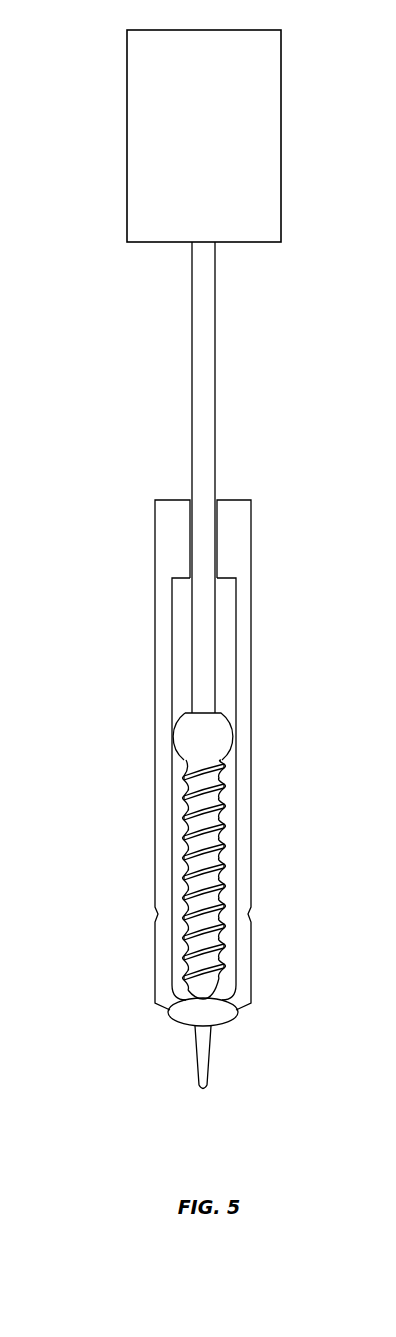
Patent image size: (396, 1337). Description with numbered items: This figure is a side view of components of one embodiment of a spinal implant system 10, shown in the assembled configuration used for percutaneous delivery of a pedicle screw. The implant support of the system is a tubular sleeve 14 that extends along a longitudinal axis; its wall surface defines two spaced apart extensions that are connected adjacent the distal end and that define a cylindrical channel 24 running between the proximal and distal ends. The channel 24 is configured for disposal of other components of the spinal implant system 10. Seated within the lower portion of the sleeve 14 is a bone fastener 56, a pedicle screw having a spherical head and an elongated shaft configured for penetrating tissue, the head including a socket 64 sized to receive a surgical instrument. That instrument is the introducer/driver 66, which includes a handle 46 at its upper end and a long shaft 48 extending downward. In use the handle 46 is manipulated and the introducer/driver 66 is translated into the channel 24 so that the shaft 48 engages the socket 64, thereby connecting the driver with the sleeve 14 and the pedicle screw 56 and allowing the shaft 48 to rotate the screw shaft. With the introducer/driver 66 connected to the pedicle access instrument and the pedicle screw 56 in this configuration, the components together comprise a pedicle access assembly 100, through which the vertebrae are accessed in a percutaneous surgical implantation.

The spinal implant system 10 is at (18, 525).
The sleeve 14 is at (155, 540).
The channel 24 is at (178, 650).
The handle 46 is at (257, 112).
The shaft 48 is at (203, 455).
The bone fastener 56 is at (200, 917).
The socket 64 is at (205, 717).
The introducer/driver 66 is at (138, 338).
The pedicle access assembly 100 is at (130, 878).